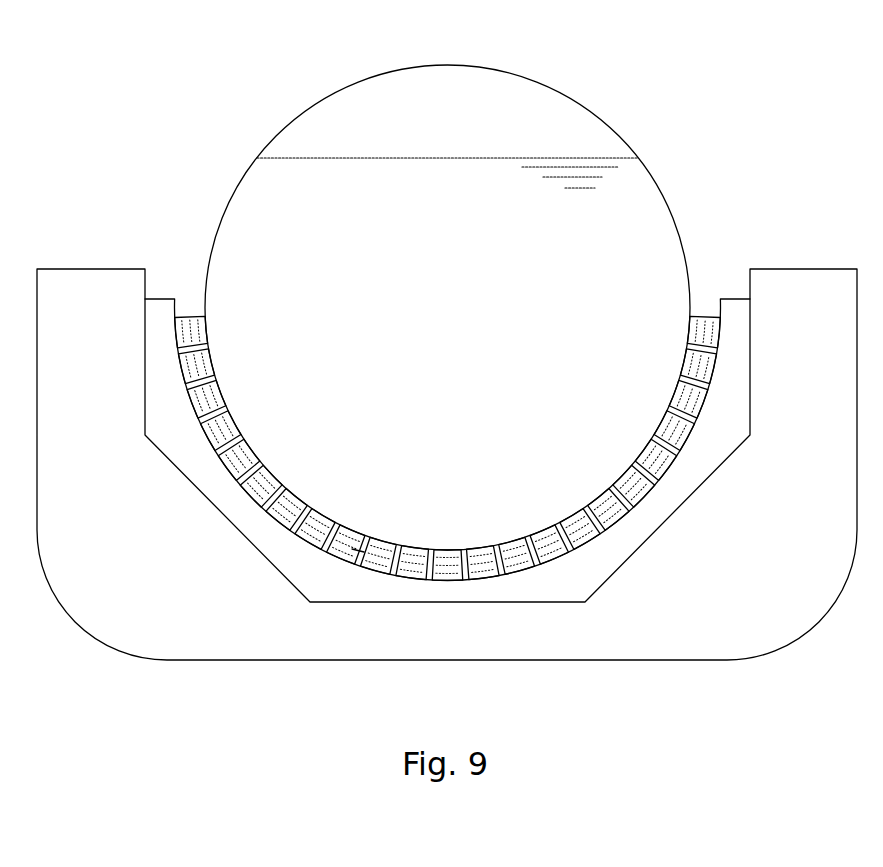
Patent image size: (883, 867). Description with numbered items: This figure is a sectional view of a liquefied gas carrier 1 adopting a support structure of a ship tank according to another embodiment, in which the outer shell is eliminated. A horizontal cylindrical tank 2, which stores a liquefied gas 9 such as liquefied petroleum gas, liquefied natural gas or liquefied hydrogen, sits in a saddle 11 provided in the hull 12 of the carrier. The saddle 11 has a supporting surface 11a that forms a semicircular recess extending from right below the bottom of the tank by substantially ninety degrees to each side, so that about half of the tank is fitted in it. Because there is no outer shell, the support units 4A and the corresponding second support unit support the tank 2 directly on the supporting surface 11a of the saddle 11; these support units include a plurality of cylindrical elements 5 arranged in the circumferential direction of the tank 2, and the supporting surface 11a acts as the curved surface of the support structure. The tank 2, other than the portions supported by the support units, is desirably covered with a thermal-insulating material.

The liquefied gas carrier 1 is at (812, 162).
The tank 2 is at (622, 138).
The first support unit 4A is at (192, 288).
The cylindrical element 5 is at (480, 548).
The liquefied gas 9 is at (623, 242).
The saddle 11 is at (160, 312).
The supporting surface 11a is at (358, 557).
The hull 12 is at (825, 303).